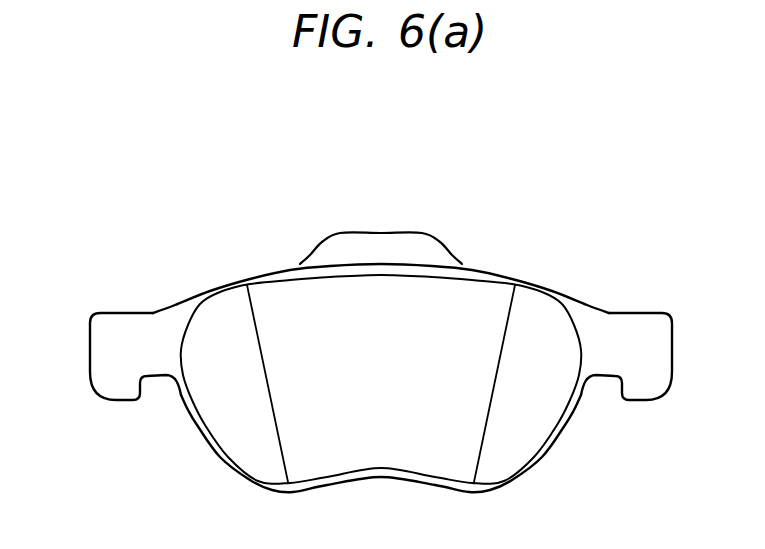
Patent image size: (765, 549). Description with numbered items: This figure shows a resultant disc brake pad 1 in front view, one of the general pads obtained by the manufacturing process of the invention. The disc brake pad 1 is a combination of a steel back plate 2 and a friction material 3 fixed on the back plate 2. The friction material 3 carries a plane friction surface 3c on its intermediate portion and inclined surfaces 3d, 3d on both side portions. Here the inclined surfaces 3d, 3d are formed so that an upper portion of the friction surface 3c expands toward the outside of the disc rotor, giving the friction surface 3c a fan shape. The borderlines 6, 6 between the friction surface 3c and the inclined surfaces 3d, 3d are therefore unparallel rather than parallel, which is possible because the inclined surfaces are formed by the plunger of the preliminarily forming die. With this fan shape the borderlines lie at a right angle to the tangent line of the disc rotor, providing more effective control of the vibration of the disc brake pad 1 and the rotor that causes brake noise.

The disc brake pad 1 is at (457, 158).
The back plate 2 is at (382, 245).
The friction material 3 is at (382, 457).
The friction surface 3c is at (367, 383).
The inclined surfaces 3d is at (232, 428).
The borderlines 6 is at (258, 335).